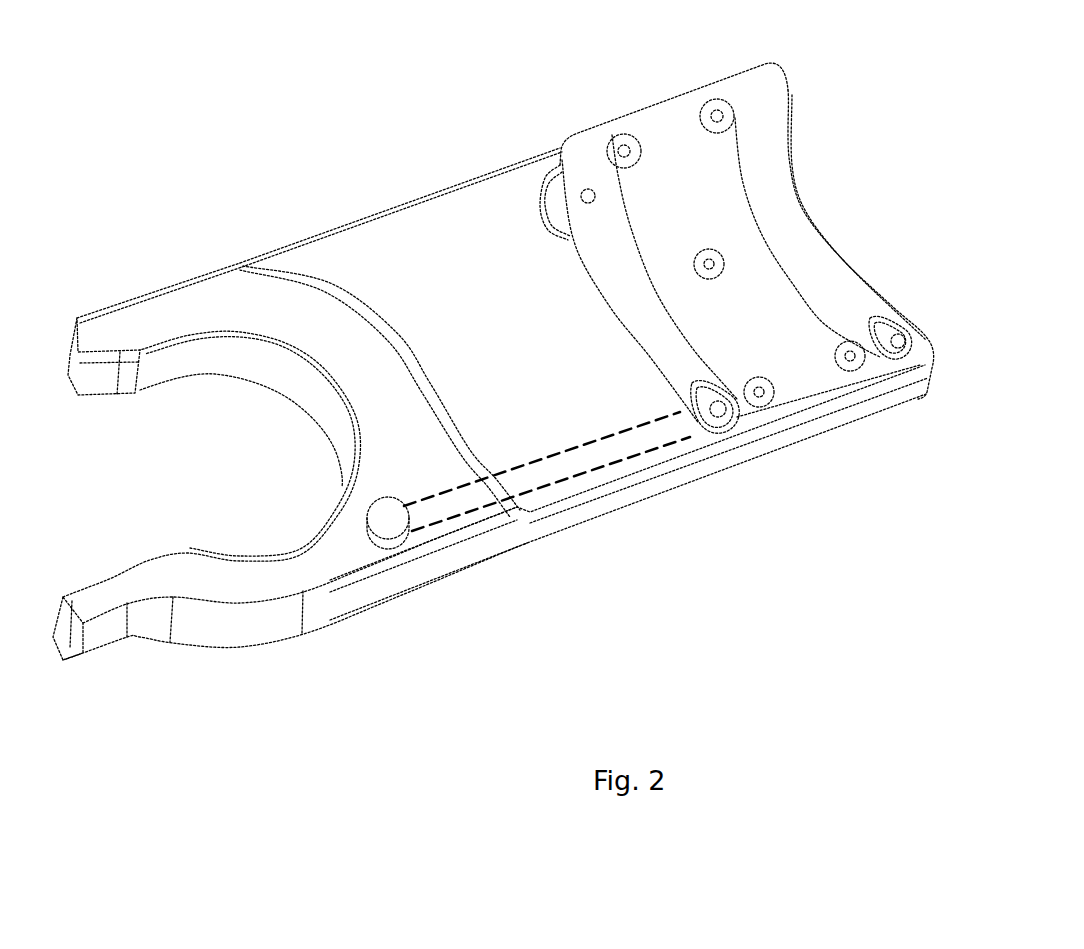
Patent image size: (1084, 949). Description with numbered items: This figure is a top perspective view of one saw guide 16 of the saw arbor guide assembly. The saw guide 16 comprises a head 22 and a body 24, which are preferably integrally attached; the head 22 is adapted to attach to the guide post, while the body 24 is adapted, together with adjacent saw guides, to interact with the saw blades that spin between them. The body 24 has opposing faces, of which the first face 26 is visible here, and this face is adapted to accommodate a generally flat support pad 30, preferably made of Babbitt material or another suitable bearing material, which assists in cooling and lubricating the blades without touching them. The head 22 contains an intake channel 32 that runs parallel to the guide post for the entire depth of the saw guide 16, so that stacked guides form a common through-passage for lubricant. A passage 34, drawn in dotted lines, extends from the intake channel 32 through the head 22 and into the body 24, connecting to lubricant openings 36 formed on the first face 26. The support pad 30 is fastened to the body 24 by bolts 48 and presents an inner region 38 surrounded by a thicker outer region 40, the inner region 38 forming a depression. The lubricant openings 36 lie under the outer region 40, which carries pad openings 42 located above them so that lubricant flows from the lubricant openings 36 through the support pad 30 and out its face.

The saw guide 16 is at (317, 97).
The head 22 is at (180, 315).
The body 24 is at (387, 240).
The first face 26 is at (553, 401).
The support pad 30 is at (683, 150).
The intake channel 32 is at (388, 520).
The passage 34 is at (562, 478).
The lubricant opening 36 is at (897, 345).
The inner region 38 is at (766, 326).
The outer region 40 is at (793, 233).
The pad opening 42 is at (897, 340).
The bolt 48 is at (710, 263).